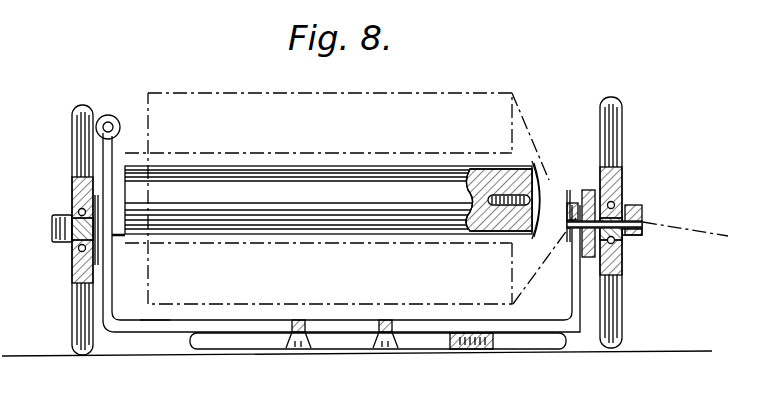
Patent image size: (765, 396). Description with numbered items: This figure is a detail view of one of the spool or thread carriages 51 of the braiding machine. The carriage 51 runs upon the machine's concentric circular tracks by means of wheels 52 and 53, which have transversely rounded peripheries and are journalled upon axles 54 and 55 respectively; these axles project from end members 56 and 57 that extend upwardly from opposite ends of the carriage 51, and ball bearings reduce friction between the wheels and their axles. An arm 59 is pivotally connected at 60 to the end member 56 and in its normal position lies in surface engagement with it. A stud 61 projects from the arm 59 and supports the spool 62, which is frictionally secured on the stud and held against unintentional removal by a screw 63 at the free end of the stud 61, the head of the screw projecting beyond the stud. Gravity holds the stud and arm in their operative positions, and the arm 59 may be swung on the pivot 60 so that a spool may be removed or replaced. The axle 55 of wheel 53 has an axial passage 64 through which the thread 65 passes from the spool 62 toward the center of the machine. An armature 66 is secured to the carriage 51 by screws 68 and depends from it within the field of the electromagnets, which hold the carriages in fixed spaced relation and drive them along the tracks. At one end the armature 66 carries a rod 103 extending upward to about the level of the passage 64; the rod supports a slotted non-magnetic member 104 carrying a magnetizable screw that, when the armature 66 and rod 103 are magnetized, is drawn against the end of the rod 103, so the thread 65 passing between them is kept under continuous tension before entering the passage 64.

The spool carriage 51 is at (186, 334).
The wheel 52 is at (83, 318).
The wheel 53 is at (623, 313).
The axle 54 is at (82, 228).
The axle 55 is at (626, 236).
The end member 56 is at (107, 291).
The end member 57 is at (590, 285).
The arm 59 is at (118, 151).
The pivot 60 is at (110, 122).
The stud 61 is at (328, 200).
The spool 62 is at (332, 156).
The screw 63 is at (539, 183).
The axial passage 64 is at (646, 219).
The thread 65 is at (421, 93).
The armature 66 is at (428, 343).
The screws 68 is at (384, 319).
The rod 103 is at (533, 338).
The member 104 is at (575, 201).